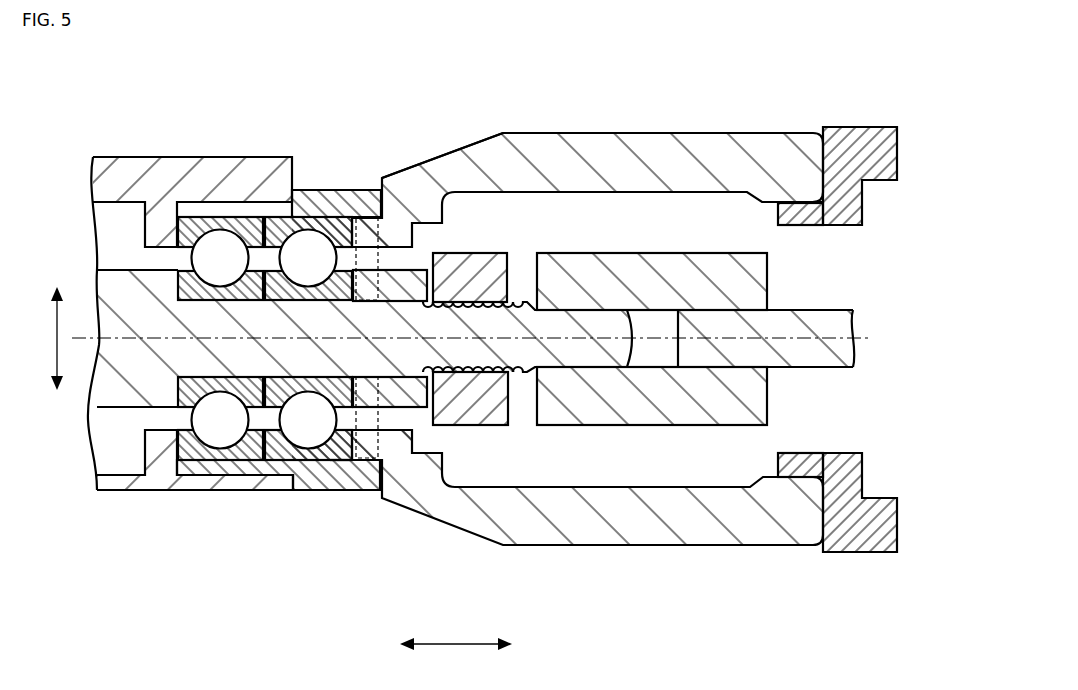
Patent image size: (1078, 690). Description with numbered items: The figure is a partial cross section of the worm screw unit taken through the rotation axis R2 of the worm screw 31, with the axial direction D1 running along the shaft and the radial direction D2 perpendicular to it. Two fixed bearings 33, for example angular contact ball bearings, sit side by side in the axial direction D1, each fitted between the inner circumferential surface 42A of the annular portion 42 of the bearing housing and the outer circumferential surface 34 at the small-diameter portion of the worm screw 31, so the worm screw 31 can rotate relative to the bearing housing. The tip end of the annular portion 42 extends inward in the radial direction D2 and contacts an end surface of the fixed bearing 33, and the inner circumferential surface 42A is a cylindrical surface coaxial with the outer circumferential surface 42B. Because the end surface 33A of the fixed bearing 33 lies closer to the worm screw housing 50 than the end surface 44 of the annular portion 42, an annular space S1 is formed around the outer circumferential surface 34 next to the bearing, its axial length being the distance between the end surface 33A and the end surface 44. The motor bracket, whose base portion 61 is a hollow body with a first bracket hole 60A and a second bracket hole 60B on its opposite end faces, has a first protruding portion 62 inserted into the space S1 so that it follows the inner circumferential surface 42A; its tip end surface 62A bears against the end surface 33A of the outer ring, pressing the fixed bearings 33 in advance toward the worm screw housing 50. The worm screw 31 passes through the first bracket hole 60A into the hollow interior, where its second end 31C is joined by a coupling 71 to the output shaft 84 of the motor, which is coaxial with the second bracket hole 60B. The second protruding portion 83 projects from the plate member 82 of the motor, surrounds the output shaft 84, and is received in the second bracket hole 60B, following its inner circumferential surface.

The worm screw 31 is at (138, 373).
The second end of the worm screw 31C is at (575, 347).
The fixed bearing 33 is at (227, 223).
The end surface of the fixed bearing 33A is at (362, 217).
The outer circumferential surface 34 is at (216, 298).
The annular portion 42 is at (307, 203).
The inner circumferential surface of the annular portion 42A is at (330, 227).
The outer circumferential surface of the annular portion 42B is at (305, 490).
The end surface of the annular portion 44 is at (382, 207).
The worm screw housing 50 is at (160, 178).
The first bracket hole 60A is at (408, 224).
The second bracket hole 60B is at (838, 266).
The base portion 61 is at (607, 150).
The first protruding portion 62 is at (370, 233).
The tip end surface of the first protruding portion 62A is at (337, 455).
The coupling 71 is at (605, 403).
The plate member 82 is at (858, 140).
The second protruding portion 83 is at (778, 203).
The output shaft 84 is at (797, 350).
The annular space S1 is at (388, 263).
The axial direction D1 is at (456, 656).
The radial direction D2 is at (42, 338).
The rotation axis R2 is at (485, 339).